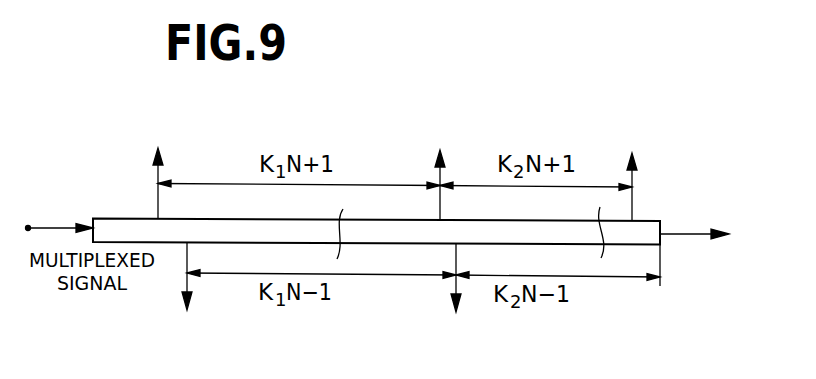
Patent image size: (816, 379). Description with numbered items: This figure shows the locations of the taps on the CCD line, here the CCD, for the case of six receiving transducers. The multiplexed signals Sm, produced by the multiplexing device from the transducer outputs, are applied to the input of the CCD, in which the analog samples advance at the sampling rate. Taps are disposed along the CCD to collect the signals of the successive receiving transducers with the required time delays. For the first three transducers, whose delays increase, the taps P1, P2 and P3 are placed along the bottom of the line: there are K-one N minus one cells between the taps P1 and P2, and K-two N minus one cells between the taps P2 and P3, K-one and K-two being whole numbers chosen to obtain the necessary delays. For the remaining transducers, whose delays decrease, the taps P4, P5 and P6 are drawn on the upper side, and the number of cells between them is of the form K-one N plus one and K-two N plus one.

The CCD line CCD is at (376, 233).
The multiplexed signals Sm is at (60, 214).
The tap P1 is at (189, 295).
The tap P2 is at (456, 298).
The tap P3 is at (710, 237).
The tap P4 is at (636, 171).
The tap P5 is at (445, 171).
The tap P6 is at (162, 170).